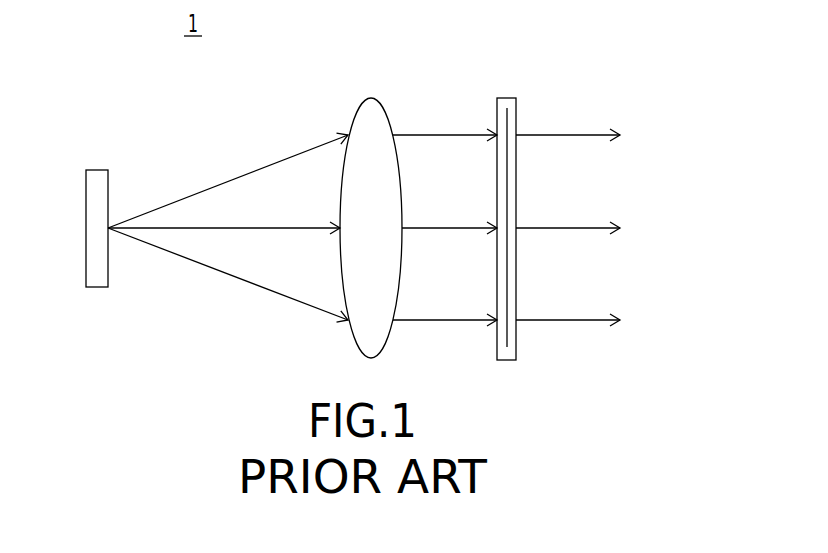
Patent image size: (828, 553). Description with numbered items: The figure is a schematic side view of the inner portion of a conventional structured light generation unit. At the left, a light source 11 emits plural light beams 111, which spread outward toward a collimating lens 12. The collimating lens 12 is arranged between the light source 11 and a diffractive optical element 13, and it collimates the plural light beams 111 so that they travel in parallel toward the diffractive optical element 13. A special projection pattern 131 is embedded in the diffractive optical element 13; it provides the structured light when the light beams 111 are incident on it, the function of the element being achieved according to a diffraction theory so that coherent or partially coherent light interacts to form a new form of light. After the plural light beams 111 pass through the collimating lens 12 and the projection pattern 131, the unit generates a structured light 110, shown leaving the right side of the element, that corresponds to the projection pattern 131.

The light source 11 is at (96, 214).
The light beams 111 is at (318, 226).
The collimating lens 12 is at (367, 123).
The diffractive optical element 13 is at (503, 99).
The projection pattern 131 is at (507, 204).
The structured light 110 is at (613, 102).